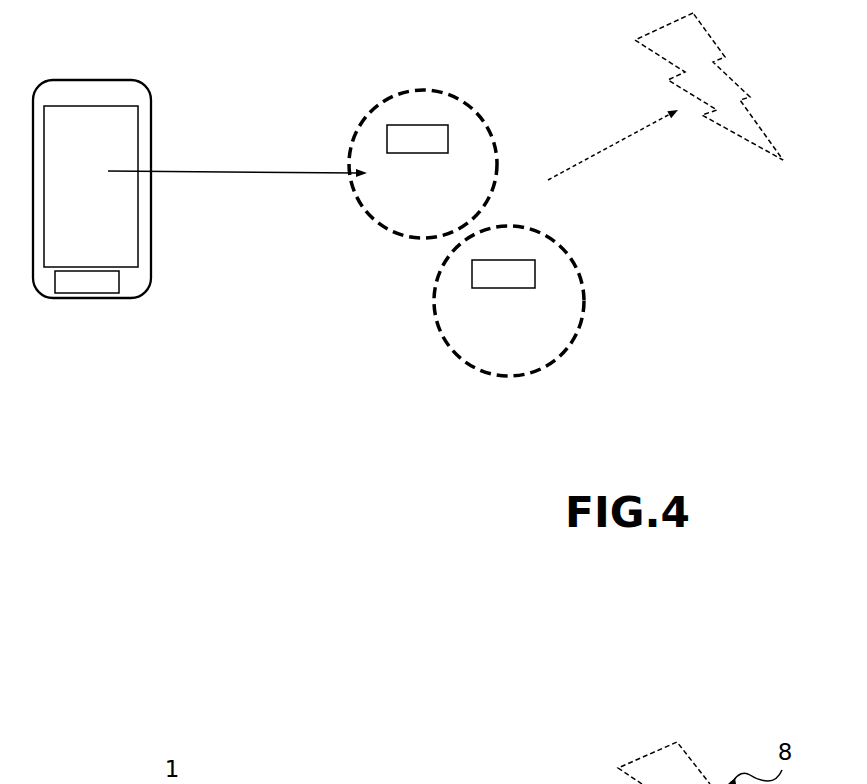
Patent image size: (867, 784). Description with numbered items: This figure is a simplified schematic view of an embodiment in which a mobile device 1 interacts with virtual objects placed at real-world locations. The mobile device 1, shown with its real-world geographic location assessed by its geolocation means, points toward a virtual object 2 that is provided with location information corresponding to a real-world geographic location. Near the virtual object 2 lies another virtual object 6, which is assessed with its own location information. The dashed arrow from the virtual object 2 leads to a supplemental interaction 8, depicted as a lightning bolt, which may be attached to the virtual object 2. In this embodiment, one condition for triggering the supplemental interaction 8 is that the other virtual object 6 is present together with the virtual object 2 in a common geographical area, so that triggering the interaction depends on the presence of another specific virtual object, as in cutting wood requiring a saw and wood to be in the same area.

The mobile device 1 is at (131, 67).
The virtual object 2 is at (498, 125).
The another virtual object 6 is at (582, 264).
The supplemental interaction 8 is at (748, 59).